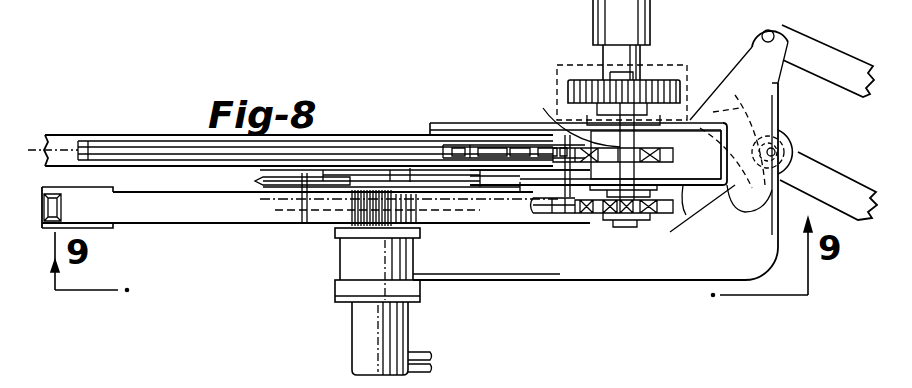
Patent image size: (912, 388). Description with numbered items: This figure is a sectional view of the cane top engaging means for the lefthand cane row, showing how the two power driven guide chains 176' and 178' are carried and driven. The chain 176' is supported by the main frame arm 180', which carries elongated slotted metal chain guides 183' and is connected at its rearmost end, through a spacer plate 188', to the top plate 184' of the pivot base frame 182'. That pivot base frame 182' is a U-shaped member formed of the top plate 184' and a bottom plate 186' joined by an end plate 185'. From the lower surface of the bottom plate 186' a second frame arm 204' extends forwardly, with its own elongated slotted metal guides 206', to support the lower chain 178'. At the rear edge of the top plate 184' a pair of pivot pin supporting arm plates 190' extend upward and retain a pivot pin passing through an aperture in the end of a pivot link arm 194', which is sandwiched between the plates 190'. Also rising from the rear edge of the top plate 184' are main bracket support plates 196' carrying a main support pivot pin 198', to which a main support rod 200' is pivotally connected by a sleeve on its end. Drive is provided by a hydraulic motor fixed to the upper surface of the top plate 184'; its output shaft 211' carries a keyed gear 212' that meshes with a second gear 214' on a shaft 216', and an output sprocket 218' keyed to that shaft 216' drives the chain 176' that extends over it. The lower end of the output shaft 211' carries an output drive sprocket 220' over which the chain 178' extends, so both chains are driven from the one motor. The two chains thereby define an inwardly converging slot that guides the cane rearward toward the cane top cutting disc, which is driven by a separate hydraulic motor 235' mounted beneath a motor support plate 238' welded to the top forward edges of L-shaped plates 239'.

The guide chain 176' is at (558, 230).
The guide chain 178' is at (561, 127).
The main frame arm 180' is at (290, 136).
The pivot base frame 182' is at (595, 210).
The elongated slotted metal chain guide 183' is at (315, 136).
The top plate 184' is at (617, 115).
The end plate 185' is at (749, 208).
The bottom plate 186' is at (714, 220).
The spacer plate 188' is at (385, 125).
The pivot pin supporting arm plate 190' is at (735, 38).
The pivot link arm 194' is at (828, 54).
The main bracket support plate 196' is at (796, 134).
The main support pivot pin 198' is at (804, 138).
The main support rod 200' is at (828, 182).
The second frame arm 204' is at (106, 199).
The elongated slotted metal guide 206' is at (316, 214).
The output shaft 211' is at (566, 120).
The gear 212' is at (559, 100).
The second gear 214' is at (613, 119).
The shaft 216' is at (691, 220).
The output sprocket 218' is at (624, 236).
The output drive sprocket 220' is at (656, 156).
The hydraulic motor 235' is at (418, 338).
The motor support plate 238' is at (424, 246).
The L-shaped plate 239' is at (512, 293).